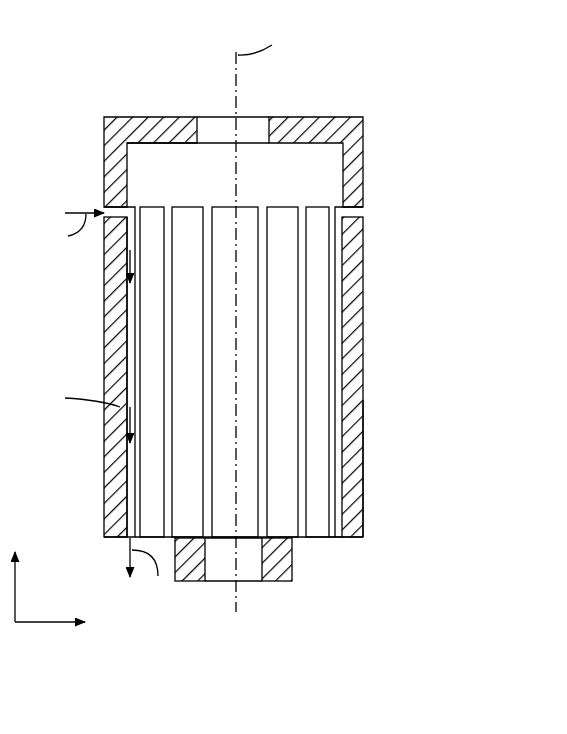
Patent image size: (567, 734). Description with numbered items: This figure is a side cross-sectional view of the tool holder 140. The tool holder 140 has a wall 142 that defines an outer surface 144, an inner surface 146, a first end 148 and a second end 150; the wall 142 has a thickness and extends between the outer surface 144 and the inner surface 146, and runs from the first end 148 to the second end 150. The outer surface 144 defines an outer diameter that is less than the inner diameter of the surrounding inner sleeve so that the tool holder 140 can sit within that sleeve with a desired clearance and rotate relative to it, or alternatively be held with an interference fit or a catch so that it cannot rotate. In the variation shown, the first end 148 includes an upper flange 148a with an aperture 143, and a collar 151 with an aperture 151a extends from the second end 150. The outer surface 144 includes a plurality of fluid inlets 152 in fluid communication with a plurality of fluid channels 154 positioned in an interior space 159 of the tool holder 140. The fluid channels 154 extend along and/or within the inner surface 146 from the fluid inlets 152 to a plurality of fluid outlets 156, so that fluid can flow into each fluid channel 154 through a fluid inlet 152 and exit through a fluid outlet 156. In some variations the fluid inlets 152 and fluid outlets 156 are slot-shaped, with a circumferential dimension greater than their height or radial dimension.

The tool holder 140 is at (327, 80).
The wall 142 is at (366, 270).
The aperture 143 is at (220, 117).
The outer surface 144 is at (365, 455).
The inner surface 146 is at (298, 172).
The first end 148 is at (255, 130).
The upper flange 148a is at (315, 117).
The second end 150 is at (122, 540).
The collar 151 is at (275, 583).
The aperture 151a is at (243, 572).
The fluid inlets 152 is at (108, 205).
The fluid channels 154 is at (190, 205).
The fluid outlets 156 is at (337, 537).
The interior space 159 is at (178, 163).